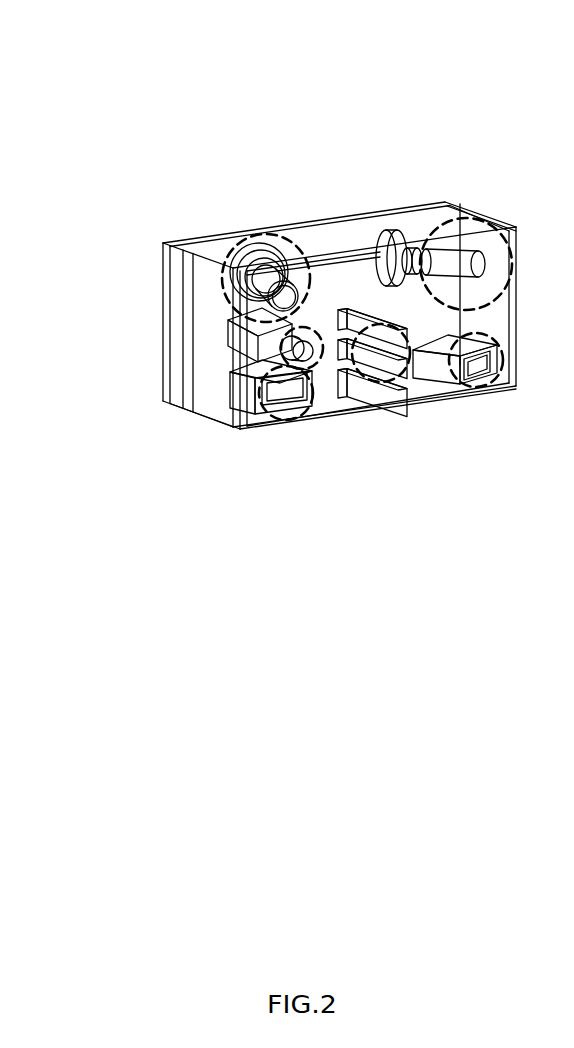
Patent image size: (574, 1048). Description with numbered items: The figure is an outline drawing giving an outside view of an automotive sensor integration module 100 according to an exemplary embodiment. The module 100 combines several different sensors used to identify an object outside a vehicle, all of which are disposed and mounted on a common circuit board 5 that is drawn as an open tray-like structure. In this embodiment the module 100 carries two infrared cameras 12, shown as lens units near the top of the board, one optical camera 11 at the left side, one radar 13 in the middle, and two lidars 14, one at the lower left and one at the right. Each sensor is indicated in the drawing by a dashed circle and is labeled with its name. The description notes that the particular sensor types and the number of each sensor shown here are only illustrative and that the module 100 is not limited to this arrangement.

The automotive sensor integration module 100 is at (473, 48).
The circuit board 5 is at (203, 246).
The optical camera 11 is at (281, 345).
The infrared camera 12 is at (437, 223).
The radar 13 is at (386, 383).
The lidar 14 is at (458, 386).